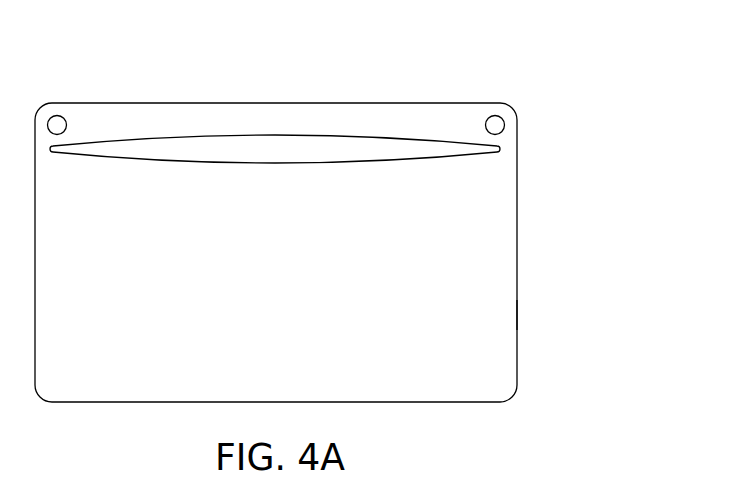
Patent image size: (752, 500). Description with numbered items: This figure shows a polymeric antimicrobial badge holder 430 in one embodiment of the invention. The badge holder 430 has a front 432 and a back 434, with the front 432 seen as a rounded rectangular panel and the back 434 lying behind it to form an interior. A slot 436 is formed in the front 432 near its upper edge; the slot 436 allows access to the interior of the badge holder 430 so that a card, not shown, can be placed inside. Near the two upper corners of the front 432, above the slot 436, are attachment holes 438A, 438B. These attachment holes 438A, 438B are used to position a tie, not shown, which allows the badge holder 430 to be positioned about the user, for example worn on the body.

The polymeric antimicrobial badge holder 430 is at (602, 89).
The front 432 is at (517, 262).
The back 434 is at (275, 150).
The slot 436 is at (173, 136).
The attachment hole 438A is at (493, 116).
The attachment hole 438B is at (54, 116).